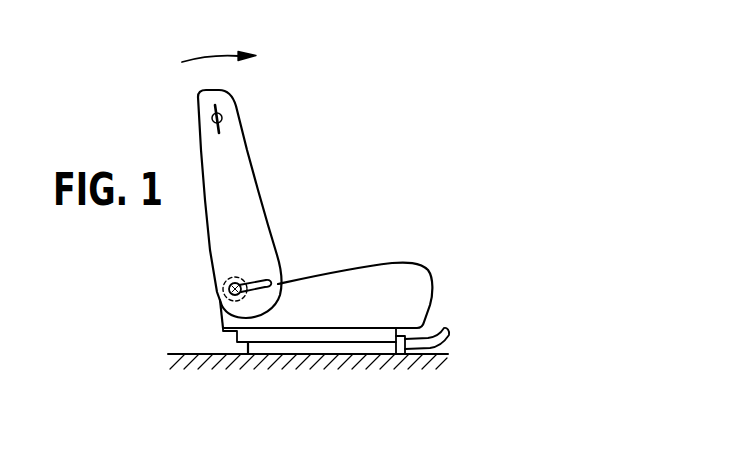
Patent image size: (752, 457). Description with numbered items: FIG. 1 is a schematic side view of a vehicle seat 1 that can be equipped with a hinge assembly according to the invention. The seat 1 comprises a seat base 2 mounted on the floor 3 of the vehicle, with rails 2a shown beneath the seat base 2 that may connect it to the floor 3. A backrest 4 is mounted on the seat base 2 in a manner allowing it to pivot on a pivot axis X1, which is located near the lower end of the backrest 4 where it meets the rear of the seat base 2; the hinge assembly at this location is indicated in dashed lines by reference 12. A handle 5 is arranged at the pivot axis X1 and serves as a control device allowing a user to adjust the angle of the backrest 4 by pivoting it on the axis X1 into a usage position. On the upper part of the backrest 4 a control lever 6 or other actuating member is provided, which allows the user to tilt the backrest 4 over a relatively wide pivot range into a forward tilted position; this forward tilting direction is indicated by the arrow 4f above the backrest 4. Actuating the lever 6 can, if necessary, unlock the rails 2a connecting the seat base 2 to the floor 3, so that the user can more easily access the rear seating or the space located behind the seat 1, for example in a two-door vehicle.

The vehicle seat 1 is at (304, 172).
The seat base 2 is at (396, 281).
The rails 2a is at (372, 348).
The floor 3 is at (181, 353).
The backrest 4 is at (211, 140).
The forward tilting direction of backrest 4f is at (203, 58).
The handle 5 is at (262, 283).
The control lever 6 is at (223, 116).
The fitting / locking device 12 is at (222, 295).
The pivot axis X1 is at (233, 287).